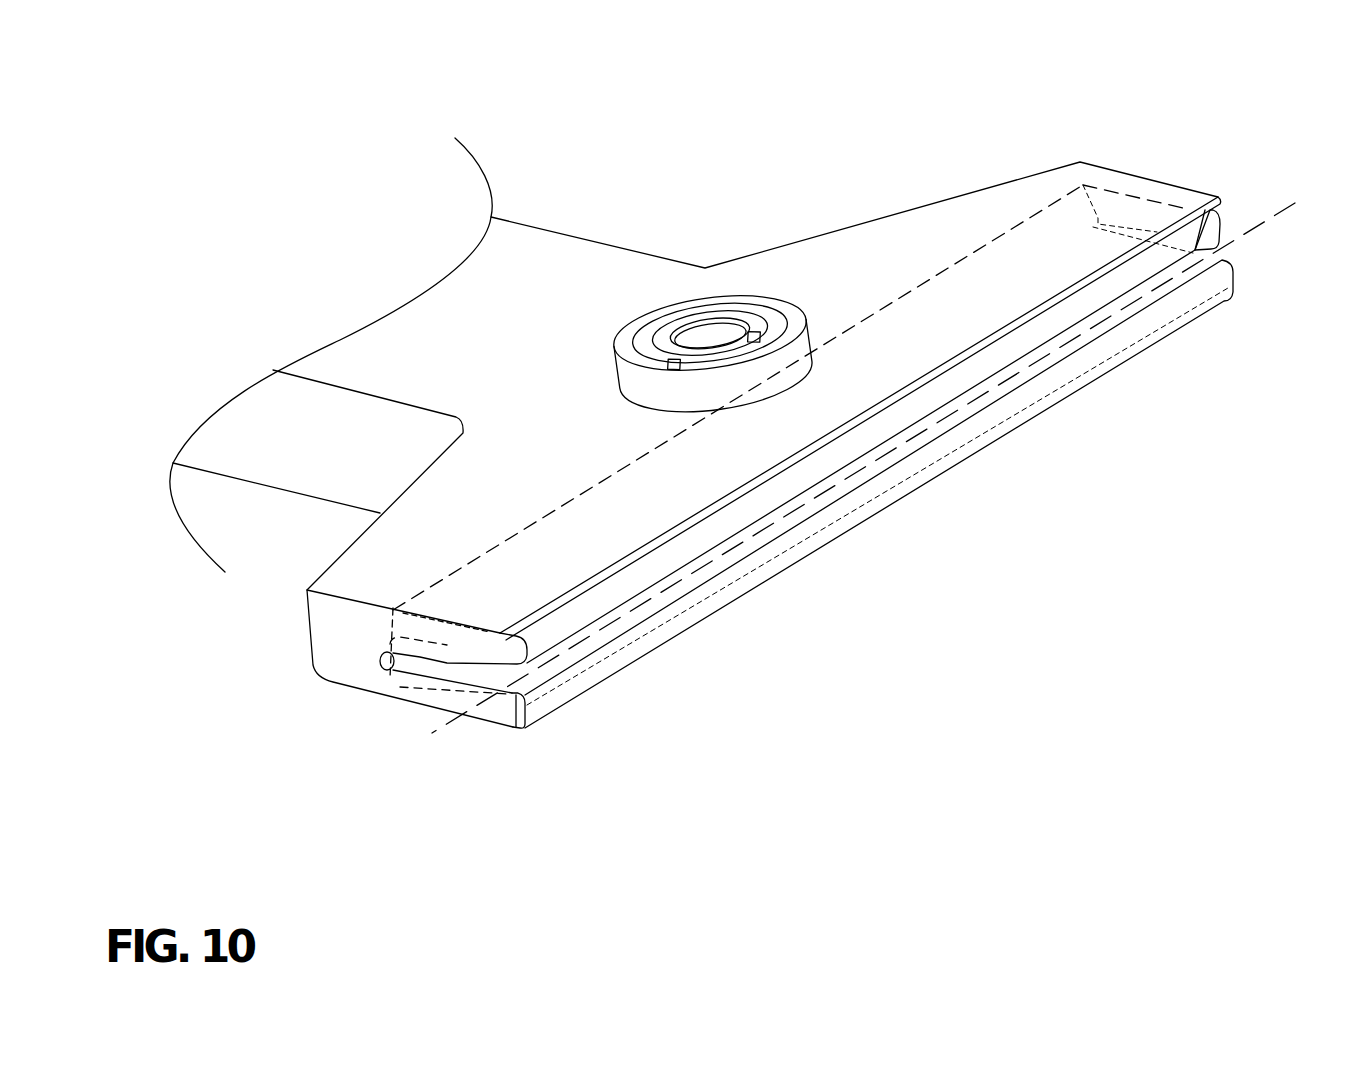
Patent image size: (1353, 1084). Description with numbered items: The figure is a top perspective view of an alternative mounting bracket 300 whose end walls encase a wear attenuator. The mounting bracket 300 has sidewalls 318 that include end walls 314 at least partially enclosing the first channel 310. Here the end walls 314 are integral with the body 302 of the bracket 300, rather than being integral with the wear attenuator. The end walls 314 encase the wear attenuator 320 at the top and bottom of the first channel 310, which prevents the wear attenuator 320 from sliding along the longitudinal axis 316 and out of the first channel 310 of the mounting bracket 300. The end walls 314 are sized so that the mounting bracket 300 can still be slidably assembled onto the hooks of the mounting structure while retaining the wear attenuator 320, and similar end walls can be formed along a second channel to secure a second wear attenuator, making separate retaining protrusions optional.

The mounting bracket 300 is at (339, 92).
The body 302 is at (500, 258).
The first channel 310 is at (472, 665).
The end walls 314 is at (1083, 185).
The longitudinal axis 316 is at (1040, 355).
The sidewalls 318 is at (1160, 192).
The wear attenuator 320 is at (568, 663).